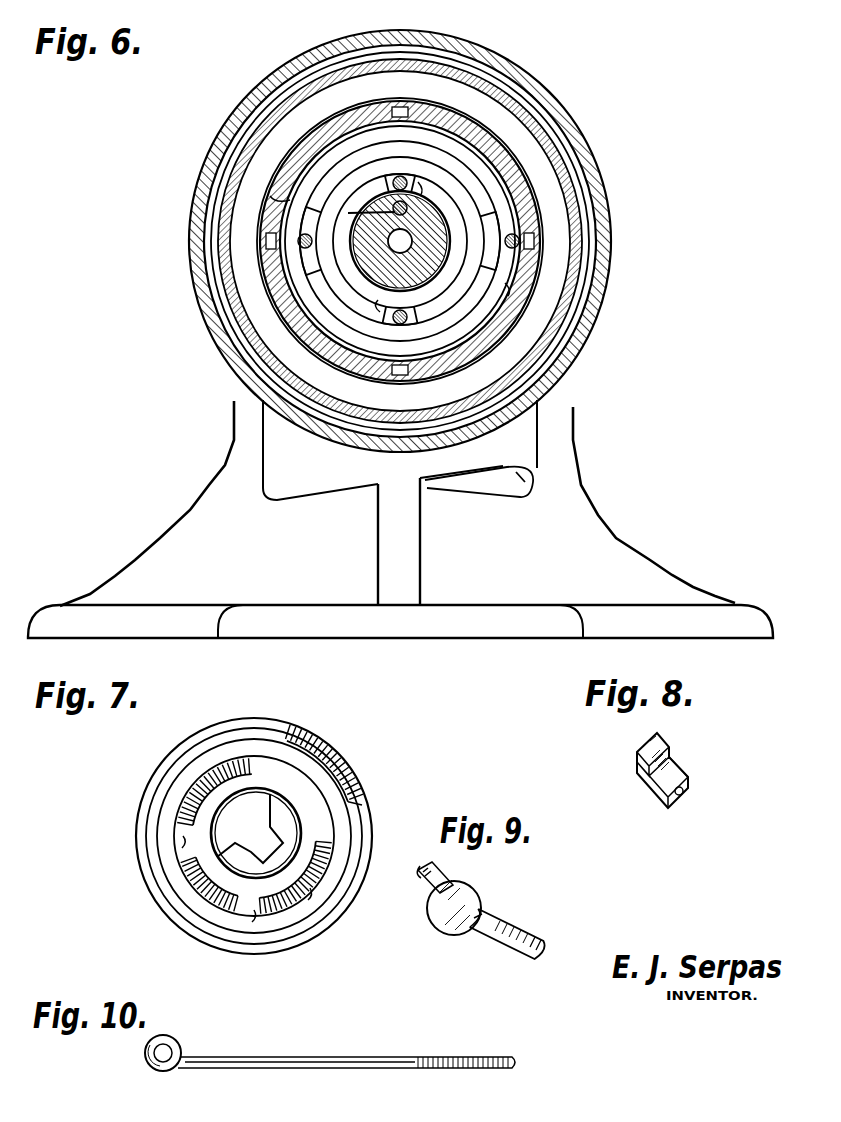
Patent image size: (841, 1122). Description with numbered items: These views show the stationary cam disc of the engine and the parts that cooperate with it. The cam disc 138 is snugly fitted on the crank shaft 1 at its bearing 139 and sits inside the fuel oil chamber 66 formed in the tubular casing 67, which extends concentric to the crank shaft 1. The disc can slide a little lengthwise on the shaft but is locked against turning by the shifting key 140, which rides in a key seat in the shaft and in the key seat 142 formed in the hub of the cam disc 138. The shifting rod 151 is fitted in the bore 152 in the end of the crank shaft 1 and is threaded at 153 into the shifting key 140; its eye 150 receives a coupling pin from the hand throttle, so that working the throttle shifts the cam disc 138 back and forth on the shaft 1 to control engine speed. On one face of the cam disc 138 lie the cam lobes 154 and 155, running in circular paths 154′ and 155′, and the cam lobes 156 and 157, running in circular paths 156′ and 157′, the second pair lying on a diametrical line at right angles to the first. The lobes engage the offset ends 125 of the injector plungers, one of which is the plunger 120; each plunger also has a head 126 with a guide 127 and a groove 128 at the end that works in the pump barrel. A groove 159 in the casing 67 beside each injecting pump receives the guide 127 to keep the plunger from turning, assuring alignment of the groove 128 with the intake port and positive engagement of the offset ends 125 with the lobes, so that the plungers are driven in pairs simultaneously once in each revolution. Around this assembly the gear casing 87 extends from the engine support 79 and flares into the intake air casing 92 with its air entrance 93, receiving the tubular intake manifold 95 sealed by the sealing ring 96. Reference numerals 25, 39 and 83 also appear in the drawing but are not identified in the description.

In FIG. 6, the crank shaft 1 is at (454, 232).
In FIG. 6, the screws 25 is at (310, 247).
In FIG. 6, the flange ring 39 is at (418, 278).
In FIG. 6, the fuel oil chamber 66 is at (305, 318).
In FIG. 6, the tubular shaped casing 67 is at (320, 292).
In FIG. 6, the engine support 79 is at (695, 588).
In FIG. 6, the hub 83 is at (362, 226).
In FIG. 6, the gear casing 87 is at (609, 262).
In FIG. 6, the intake air casing 92 is at (478, 405).
In FIG. 6, the air entrance 93 is at (525, 498).
In FIG. 6, the intake manifold 95 is at (578, 177).
In FIG. 6, the sealing ring 96 is at (570, 190).
In FIG. 9, the injector plunger 120 is at (520, 925).
In FIG. 6, the offset end 125 is at (394, 181).
In FIG. 9, the offset end 125 is at (445, 872).
In FIG. 9, the head 126 is at (462, 885).
In FIG. 9, the guide 127 is at (489, 948).
In FIG. 9, the groove 128 is at (510, 958).
In FIG. 6, the cam disc 138 is at (352, 378).
In FIG. 7, the cam disc 138 is at (183, 733).
In FIG. 7, the bearing 139 is at (272, 808).
In FIG. 8, the shifting key 140 is at (690, 757).
In FIG. 7, the key seat 142 is at (250, 829).
In FIG. 10, the eye 150 is at (150, 1058).
In FIG. 6, the shifting rod 151 is at (394, 209).
In FIG. 10, the shifting rod 151 is at (290, 1068).
In FIG. 6, the bore 152 is at (360, 211).
In FIG. 8, the threaded portion 153 is at (684, 792).
In FIG. 6, the cam lobe 154 is at (417, 190).
In FIG. 7, the cam lobe 154 is at (300, 880).
In FIG. 6, the circular path 154′ is at (445, 200).
In FIG. 7, the circular path 154′ is at (310, 895).
In FIG. 6, the cam lobe 155 is at (400, 326).
In FIG. 7, the cam lobe 155 is at (205, 787).
In FIG. 6, the circular path 155′ is at (350, 300).
In FIG. 7, the circular path 155′ is at (183, 836).
In FIG. 6, the cam lobe 156 is at (500, 282).
In FIG. 7, the cam lobe 156 is at (187, 913).
In FIG. 6, the circular path 156′ is at (515, 295).
In FIG. 7, the circular path 156′ is at (252, 922).
In FIG. 6, the cam lobe 157 is at (278, 278).
In FIG. 7, the cam lobe 157 is at (340, 743).
In FIG. 6, the circular path 157′ is at (270, 200).
In FIG. 7, the circular path 157′ is at (365, 810).
In FIG. 6, the groove 159 is at (402, 110).